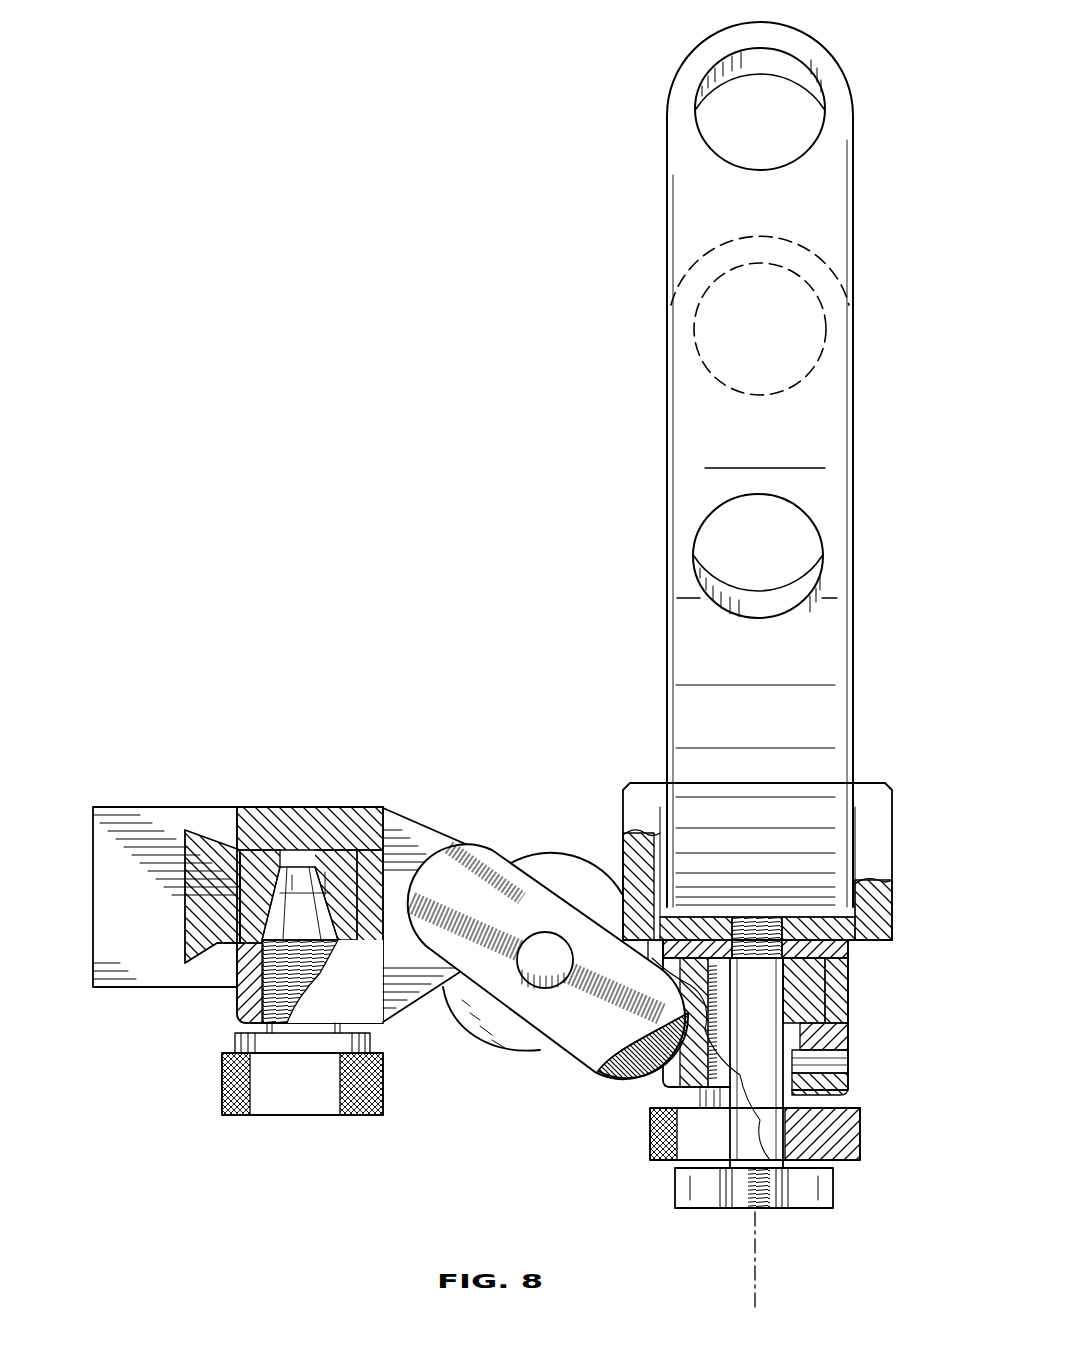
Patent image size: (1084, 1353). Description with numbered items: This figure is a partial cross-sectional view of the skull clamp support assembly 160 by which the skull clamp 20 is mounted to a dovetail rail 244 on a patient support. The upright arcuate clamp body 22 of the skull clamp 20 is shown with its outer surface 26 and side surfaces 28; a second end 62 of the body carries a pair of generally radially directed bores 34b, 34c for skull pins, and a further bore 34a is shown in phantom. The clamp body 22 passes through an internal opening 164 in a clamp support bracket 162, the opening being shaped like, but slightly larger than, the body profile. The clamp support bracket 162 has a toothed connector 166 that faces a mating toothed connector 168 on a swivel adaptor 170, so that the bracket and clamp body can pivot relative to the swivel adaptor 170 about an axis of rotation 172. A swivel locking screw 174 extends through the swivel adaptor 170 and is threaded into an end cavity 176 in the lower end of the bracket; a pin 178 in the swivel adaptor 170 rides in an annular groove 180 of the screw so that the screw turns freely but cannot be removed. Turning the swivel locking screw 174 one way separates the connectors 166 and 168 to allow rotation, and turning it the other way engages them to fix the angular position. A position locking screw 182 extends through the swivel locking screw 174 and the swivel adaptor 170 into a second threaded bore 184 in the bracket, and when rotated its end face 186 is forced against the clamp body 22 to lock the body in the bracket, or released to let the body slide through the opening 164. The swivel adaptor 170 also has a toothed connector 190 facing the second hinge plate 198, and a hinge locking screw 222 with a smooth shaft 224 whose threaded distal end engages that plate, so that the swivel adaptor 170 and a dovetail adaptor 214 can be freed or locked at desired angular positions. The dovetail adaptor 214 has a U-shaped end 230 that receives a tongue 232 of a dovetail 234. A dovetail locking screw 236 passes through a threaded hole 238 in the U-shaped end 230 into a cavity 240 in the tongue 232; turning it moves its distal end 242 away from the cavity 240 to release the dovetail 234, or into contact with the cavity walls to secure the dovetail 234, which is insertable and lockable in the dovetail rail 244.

The skull clamp 20 is at (613, 127).
The clamp body 22 is at (828, 48).
The outer surface 26 is at (776, 452).
The side surfaces 28 is at (667, 433).
The bore 34a is at (760, 265).
The bore 34b is at (762, 72).
The bore 34c is at (760, 593).
The second end 62 is at (667, 160).
The skull clamp support assembly 160 is at (471, 753).
The clamp support bracket 162 is at (858, 784).
The internal opening 164 is at (853, 844).
The toothed connector 166 is at (848, 975).
The toothed connector 168 is at (857, 946).
The swivel adaptor 170 is at (848, 1036).
The axis of rotation 172 is at (752, 1234).
The swivel locking screw 174 is at (650, 1133).
The end cavity 176 is at (786, 992).
The pin 178 is at (848, 1062).
The annular groove 180 is at (848, 1090).
The position locking screw 182 is at (675, 1188).
The second threaded bore 184 is at (776, 925).
The end face 186 is at (757, 918).
The toothed connector 190 is at (630, 1082).
The second hinge plate 198 is at (482, 907).
The dovetail adaptor 214 is at (430, 826).
The hinge locking screw 222 is at (552, 862).
The smooth shaft 224 is at (545, 960).
The U-shaped end 230 is at (262, 807).
The tongue 232 is at (253, 867).
The dovetail 234 is at (186, 941).
The dovetail locking screw 236 is at (221, 1116).
The threaded hole 238 is at (280, 972).
The cavity 240 is at (287, 868).
The distal end 242 is at (320, 872).
The dovetail rail 244 is at (150, 808).